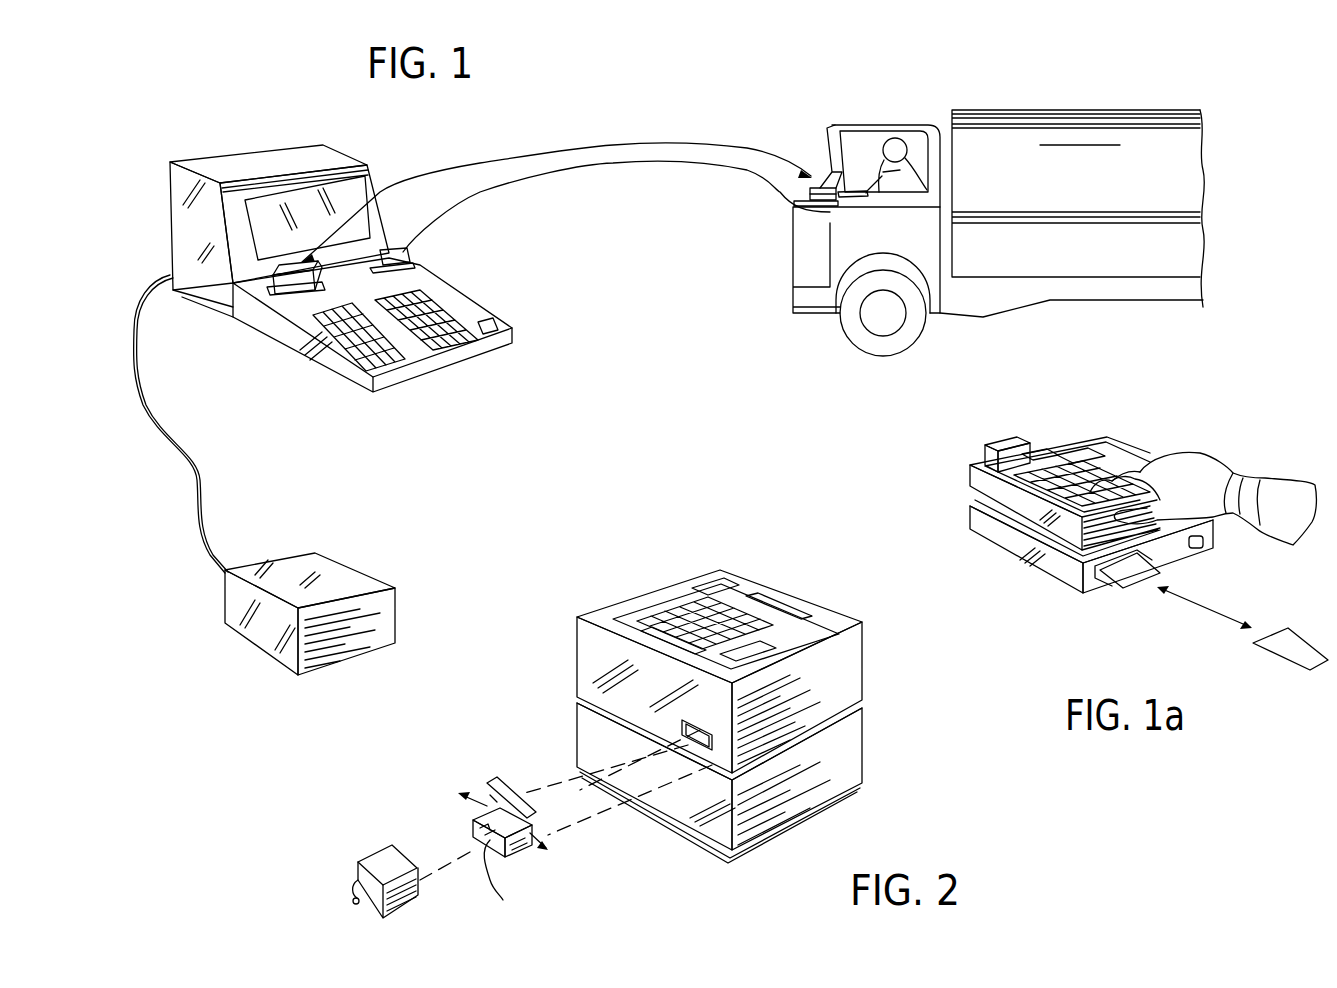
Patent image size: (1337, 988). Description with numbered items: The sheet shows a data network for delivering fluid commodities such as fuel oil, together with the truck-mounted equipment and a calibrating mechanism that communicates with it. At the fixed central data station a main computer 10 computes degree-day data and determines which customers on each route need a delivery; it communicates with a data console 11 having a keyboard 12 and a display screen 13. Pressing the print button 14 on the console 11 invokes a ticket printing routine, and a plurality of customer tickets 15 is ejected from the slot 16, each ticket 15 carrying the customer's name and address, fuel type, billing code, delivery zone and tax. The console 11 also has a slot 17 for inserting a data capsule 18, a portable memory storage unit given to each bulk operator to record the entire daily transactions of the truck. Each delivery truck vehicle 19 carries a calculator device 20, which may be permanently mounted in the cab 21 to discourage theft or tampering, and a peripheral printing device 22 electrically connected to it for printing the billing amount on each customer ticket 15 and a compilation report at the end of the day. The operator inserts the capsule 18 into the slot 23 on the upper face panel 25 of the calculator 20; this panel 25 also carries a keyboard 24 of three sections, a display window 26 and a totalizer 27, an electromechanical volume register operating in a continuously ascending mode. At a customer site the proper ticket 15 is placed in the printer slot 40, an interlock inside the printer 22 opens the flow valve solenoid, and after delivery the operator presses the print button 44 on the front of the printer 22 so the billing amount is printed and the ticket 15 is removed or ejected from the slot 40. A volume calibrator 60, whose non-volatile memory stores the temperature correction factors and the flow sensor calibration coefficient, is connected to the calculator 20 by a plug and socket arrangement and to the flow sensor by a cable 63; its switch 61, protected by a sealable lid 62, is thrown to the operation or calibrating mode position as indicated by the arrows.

In FIG. 1, the main computer 10 is at (340, 573).
In FIG. 1, the data console 11 is at (377, 168).
In FIG. 1, the keyboard 12 is at (470, 300).
In FIG. 1, the display screen 13 is at (266, 234).
In FIG. 1, the print button 14 is at (503, 317).
In FIG. 1, the customer ticket 15 is at (413, 252).
In FIG. 1A, the customer ticket 15 is at (1133, 582).
In FIG. 1, the slot 16 is at (413, 277).
In FIG. 1, the slot 17 is at (287, 297).
In FIG. 1, the data capsule 18 is at (272, 292).
In FIG. 1A, the data capsule 18 is at (985, 452).
In FIG. 1, the delivery truck vehicle 19 is at (1166, 103).
In FIG. 1, the calculator device 20 is at (830, 188).
In FIG. 1A, the calculator device 20 is at (1012, 488).
In FIG. 2, the calculator device 20 is at (577, 657).
In FIG. 1, the cab 21 is at (888, 125).
In FIG. 1, the peripheral printing device 22 is at (807, 203).
In FIG. 1A, the peripheral printing device 22 is at (1052, 577).
In FIG. 2, the peripheral printing device 22 is at (577, 720).
In FIG. 1A, the slot 23 is at (970, 488).
In FIG. 1A, the keyboard 24 is at (1114, 448).
In FIG. 1A, the upper face panel 25 is at (1022, 510).
In FIG. 1A, the display window 26 is at (1070, 455).
In FIG. 1A, the totalizer 27 is at (1045, 452).
In FIG. 1A, the printer slot 40 is at (1098, 577).
In FIG. 1A, the print button 44 is at (1197, 548).
In FIG. 2, the volume calibrator 60 is at (520, 858).
In FIG. 2, the switch 61 is at (482, 808).
In FIG. 2, the sealable lid 62 is at (500, 782).
In FIG. 2, the cable 63 is at (503, 900).